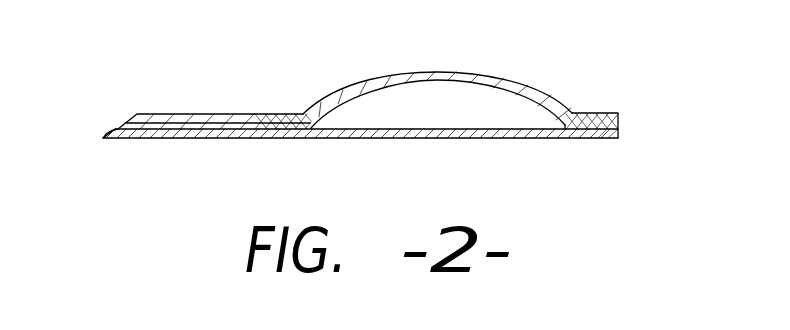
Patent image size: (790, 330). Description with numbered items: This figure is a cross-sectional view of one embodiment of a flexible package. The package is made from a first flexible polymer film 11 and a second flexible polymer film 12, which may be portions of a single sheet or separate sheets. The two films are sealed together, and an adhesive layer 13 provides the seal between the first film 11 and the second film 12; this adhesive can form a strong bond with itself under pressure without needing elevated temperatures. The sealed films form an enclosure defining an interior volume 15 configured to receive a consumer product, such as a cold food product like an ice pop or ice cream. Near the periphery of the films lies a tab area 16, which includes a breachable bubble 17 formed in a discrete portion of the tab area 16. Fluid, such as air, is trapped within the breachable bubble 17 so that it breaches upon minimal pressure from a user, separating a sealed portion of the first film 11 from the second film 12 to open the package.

The first flexible polymer film 11 is at (207, 113).
The second flexible polymer film 12 is at (193, 139).
The adhesive layer 13 is at (283, 128).
The interior volume 15 is at (113, 127).
The tab area 16 is at (382, 73).
The breachable bubble 17 is at (468, 98).